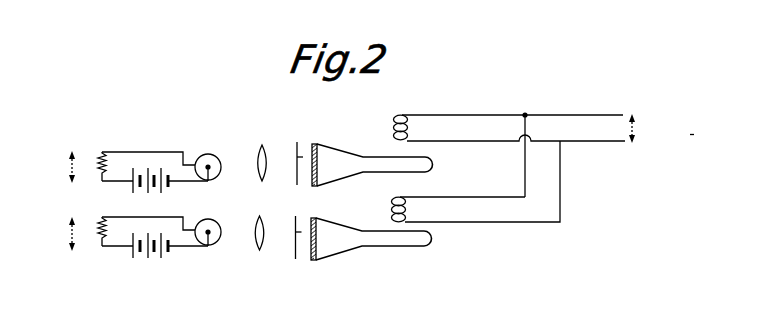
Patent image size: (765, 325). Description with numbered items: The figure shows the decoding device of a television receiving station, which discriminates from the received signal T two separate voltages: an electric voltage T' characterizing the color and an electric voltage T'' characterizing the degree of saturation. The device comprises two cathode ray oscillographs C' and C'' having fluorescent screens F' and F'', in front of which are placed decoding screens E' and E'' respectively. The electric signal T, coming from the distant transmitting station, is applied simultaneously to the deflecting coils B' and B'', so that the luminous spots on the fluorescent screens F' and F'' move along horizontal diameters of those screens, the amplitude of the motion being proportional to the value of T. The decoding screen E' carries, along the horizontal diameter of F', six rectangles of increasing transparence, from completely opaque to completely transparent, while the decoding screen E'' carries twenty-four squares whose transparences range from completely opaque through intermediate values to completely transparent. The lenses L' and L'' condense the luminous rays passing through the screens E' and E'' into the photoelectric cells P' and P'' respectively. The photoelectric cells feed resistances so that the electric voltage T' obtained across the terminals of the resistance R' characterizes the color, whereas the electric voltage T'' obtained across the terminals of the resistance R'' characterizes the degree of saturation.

The electric voltage characterizing the color T' is at (60, 167).
The resistance R' is at (92, 166).
The photoelectric cell P' is at (208, 152).
The lens L' is at (261, 150).
The decoding screen E' is at (297, 151).
The fluorescent screen F' is at (303, 163).
The cathode ray oscillograph C' is at (372, 165).
The deflecting coil B' is at (497, 124).
The electric voltage characterizing the degree of saturation T'' is at (59, 234).
The resistance R'' is at (92, 231).
The photoelectric cell P'' is at (209, 218).
The lens L'' is at (262, 220).
The decoding screen E'' is at (298, 225).
The fluorescent screen F'' is at (304, 234).
The cathode ray oscillograph C'' is at (371, 239).
The deflecting coil B'' is at (463, 181).
The electric signal T is at (639, 128).